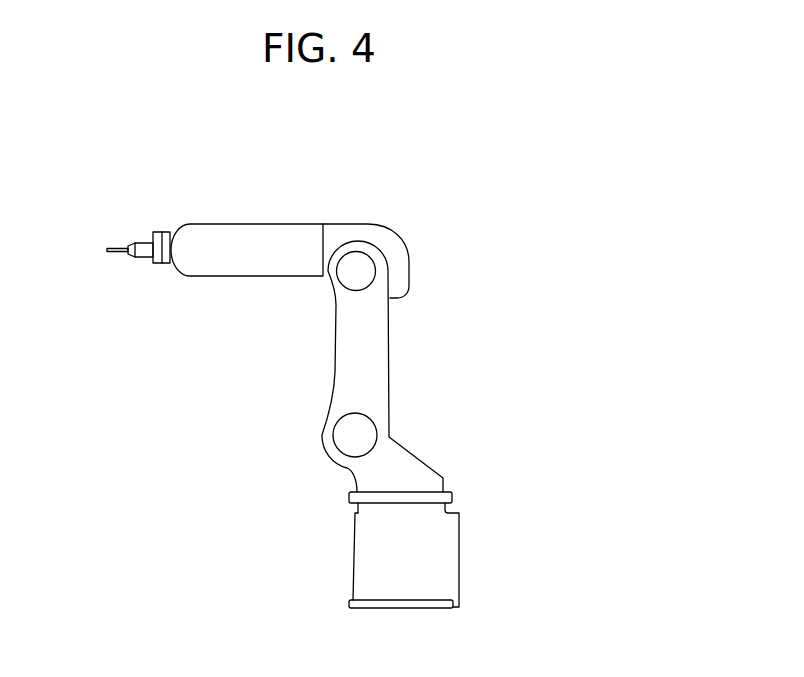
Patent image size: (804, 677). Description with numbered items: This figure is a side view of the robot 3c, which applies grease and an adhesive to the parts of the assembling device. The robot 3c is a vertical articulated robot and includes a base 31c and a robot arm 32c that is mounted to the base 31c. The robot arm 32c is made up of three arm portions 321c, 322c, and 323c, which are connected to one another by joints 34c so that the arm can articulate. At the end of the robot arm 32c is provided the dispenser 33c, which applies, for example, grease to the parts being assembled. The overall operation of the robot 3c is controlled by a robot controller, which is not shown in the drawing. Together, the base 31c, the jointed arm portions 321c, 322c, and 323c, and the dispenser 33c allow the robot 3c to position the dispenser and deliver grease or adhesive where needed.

The robot 3c is at (553, 223).
The base 31c is at (455, 557).
The robot arm 32c is at (372, 356).
The arm portion 321c is at (163, 263).
The arm portion 322c is at (268, 258).
The arm portion 323c is at (375, 385).
The dispenser 33c is at (125, 252).
The joints 34c is at (360, 270).